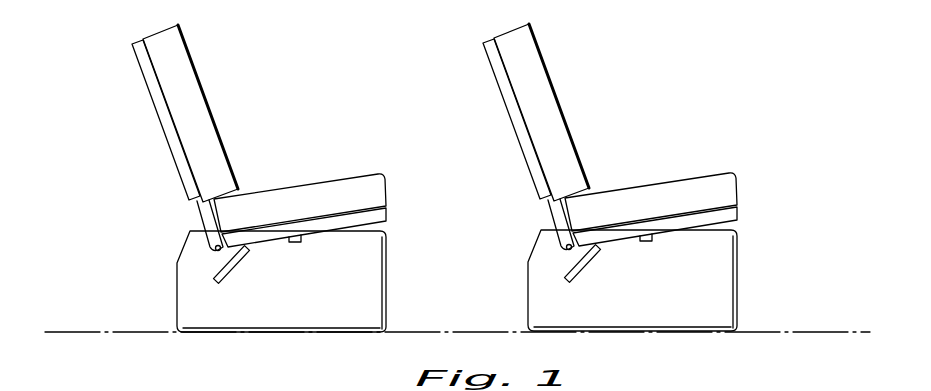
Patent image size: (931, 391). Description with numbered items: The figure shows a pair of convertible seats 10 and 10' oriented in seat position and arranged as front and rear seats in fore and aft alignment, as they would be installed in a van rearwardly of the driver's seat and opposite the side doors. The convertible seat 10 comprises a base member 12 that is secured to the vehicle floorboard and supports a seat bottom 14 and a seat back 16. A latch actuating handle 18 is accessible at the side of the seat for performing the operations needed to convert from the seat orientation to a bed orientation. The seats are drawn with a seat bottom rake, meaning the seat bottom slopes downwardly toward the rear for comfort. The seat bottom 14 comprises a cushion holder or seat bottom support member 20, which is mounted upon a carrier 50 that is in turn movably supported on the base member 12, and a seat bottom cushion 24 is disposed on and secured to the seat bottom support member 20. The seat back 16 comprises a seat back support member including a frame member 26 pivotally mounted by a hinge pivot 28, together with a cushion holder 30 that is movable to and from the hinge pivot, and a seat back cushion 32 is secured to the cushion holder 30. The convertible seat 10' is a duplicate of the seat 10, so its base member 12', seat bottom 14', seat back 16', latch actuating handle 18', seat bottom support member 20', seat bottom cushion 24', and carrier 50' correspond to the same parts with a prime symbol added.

The convertible seat 10 is at (630, 177).
The base member 12 is at (675, 280).
The seat bottom 14 is at (698, 185).
The seat back 16 is at (530, 112).
The latch actuating handle 18 is at (606, 280).
The seat bottom support member 20 is at (699, 229).
The seat bottom cushion 24 is at (651, 175).
The frame member 26 is at (555, 217).
The hinge pivot 28 is at (578, 254).
The cushion holder 30 is at (504, 82).
The seat back cushion 32 is at (560, 145).
The carrier 50 is at (664, 261).
The convertible seat 10' is at (295, 178).
The base member 12' is at (315, 281).
The seat bottom 14' is at (336, 188).
The seat back 16' is at (200, 138).
The latch actuating handle 18' is at (245, 282).
The seat bottom support member 20' is at (339, 224).
The seat bottom cushion 24' is at (300, 181).
The carrier 50' is at (318, 261).